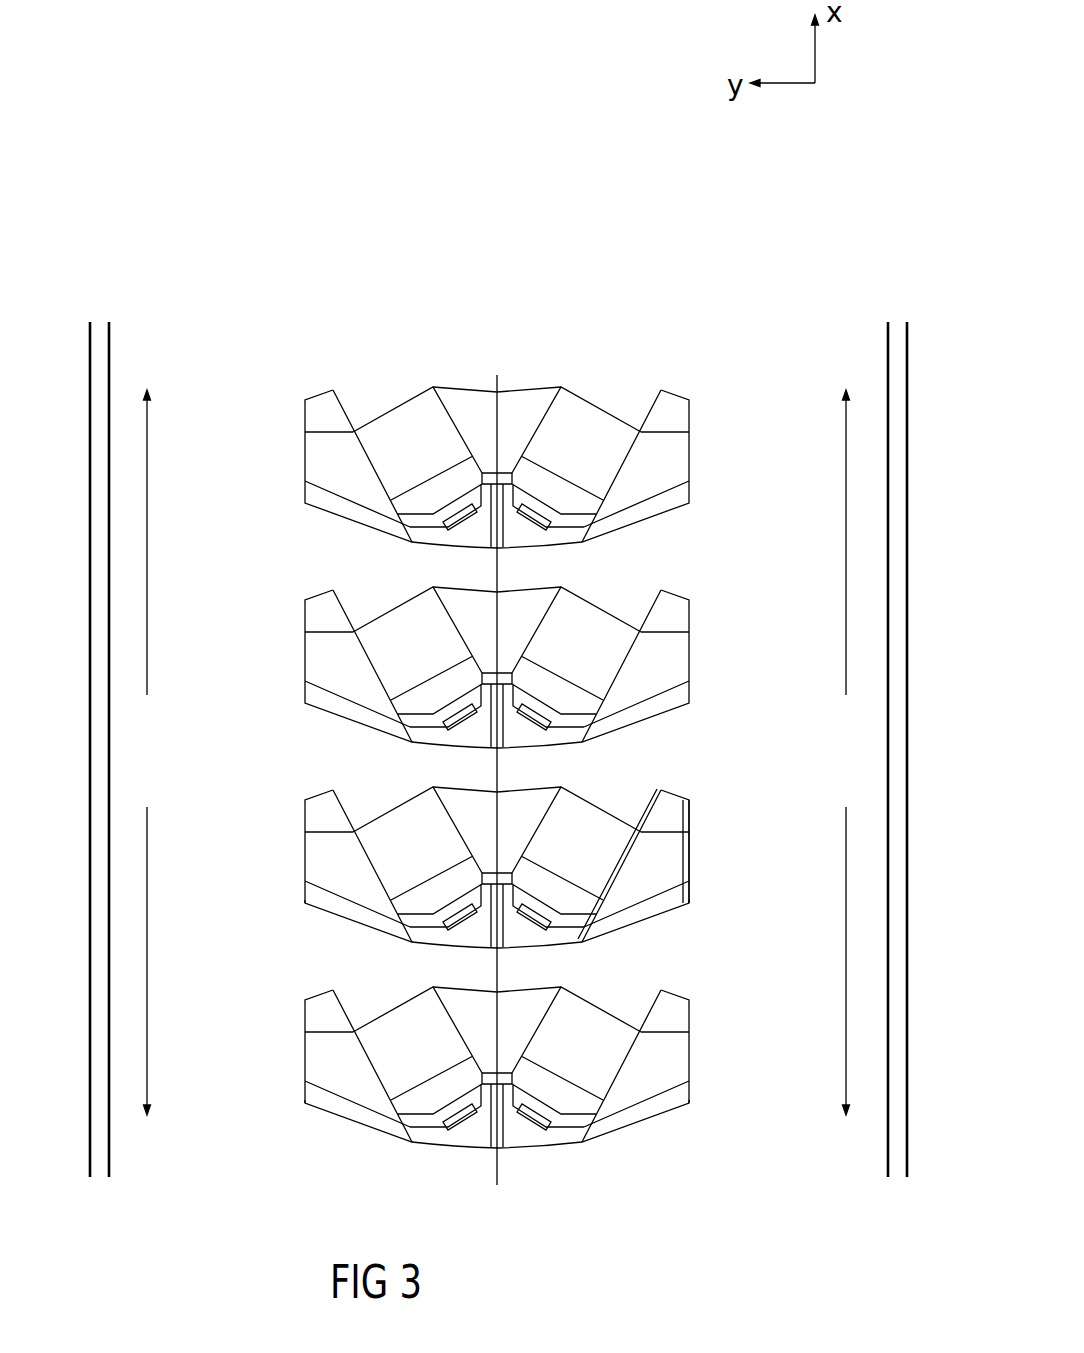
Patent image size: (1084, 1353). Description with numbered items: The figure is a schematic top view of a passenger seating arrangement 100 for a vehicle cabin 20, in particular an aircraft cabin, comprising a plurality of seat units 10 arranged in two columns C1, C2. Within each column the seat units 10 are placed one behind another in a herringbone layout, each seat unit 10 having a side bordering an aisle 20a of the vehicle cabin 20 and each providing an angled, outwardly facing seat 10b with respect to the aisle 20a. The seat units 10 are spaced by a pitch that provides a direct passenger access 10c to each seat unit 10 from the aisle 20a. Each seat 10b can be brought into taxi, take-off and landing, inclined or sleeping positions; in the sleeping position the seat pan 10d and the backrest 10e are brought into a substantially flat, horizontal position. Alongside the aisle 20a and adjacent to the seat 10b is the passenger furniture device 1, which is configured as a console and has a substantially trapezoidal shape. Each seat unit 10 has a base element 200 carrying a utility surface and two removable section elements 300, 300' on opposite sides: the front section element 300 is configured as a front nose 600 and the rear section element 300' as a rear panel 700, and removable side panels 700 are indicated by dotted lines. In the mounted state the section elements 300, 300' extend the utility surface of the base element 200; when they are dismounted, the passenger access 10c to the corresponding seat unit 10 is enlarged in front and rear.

The passenger furniture device 1 is at (285, 452).
The seat unit 10 is at (332, 360).
The seat 10b is at (554, 405).
The passenger access 10c is at (383, 372).
The seat pan 10d is at (623, 430).
The backrest 10e is at (552, 485).
The vehicle cabin 20 is at (733, 175).
The aisle 20a is at (500, 752).
The passenger seating arrangement 100 is at (815, 240).
The base element 200 is at (305, 482).
The removable section element 300 is at (500, 686).
The removable rear section element 300' is at (501, 1000).
The front nose 600 is at (705, 815).
The rear panel 700 is at (706, 888).
The first column C1 is at (440, 218).
The second column C2 is at (585, 218).